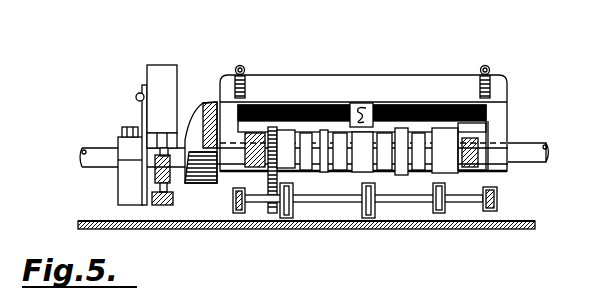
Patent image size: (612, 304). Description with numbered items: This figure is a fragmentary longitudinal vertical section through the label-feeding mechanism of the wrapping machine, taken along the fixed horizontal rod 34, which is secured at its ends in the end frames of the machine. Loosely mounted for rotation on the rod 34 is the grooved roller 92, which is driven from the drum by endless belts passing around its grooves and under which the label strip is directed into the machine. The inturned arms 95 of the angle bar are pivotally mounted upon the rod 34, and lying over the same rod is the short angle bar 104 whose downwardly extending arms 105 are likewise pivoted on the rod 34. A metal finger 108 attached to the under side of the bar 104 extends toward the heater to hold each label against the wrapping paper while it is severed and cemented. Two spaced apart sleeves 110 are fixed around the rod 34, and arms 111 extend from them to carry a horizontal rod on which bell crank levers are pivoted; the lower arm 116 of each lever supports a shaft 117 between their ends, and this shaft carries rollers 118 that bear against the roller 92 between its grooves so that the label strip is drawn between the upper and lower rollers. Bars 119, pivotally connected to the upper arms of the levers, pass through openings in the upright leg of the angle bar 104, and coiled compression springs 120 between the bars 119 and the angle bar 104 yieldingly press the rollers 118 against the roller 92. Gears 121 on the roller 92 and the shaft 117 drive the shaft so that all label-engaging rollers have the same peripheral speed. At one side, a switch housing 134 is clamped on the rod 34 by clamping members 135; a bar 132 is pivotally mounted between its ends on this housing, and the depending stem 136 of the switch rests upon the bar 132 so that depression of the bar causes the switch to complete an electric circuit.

The rod 34 is at (538, 165).
The roller 92 is at (437, 133).
The inturned arms 95 is at (200, 177).
The short angle bar 104 is at (402, 86).
The downwardly extending arms 105 is at (228, 120).
The metal finger 108 is at (336, 104).
The sleeves 110 is at (467, 128).
The arms 111 is at (245, 162).
The downwardly and inwardly extending arm 116 is at (238, 214).
The shaft 117 is at (400, 204).
The rollers 118 is at (367, 220).
The bars 119 is at (241, 66).
The coiled compression springs 120 is at (248, 90).
The gears 121 is at (270, 200).
The bar 132 is at (163, 206).
The switch housing 134 is at (160, 78).
The clamping members 135 is at (125, 178).
The depending stem 136 is at (160, 168).